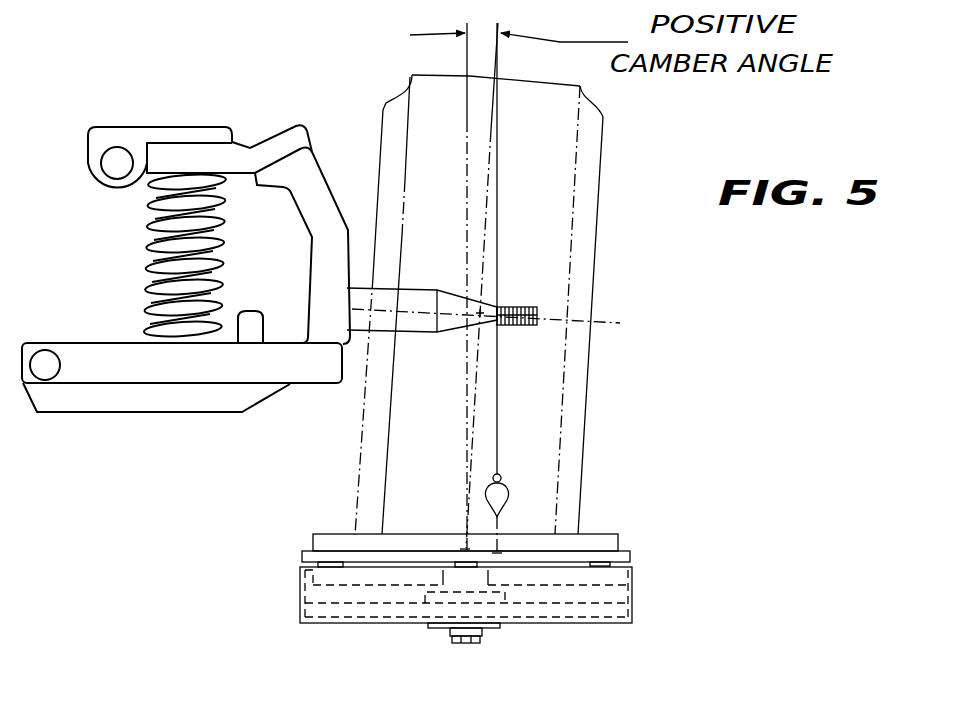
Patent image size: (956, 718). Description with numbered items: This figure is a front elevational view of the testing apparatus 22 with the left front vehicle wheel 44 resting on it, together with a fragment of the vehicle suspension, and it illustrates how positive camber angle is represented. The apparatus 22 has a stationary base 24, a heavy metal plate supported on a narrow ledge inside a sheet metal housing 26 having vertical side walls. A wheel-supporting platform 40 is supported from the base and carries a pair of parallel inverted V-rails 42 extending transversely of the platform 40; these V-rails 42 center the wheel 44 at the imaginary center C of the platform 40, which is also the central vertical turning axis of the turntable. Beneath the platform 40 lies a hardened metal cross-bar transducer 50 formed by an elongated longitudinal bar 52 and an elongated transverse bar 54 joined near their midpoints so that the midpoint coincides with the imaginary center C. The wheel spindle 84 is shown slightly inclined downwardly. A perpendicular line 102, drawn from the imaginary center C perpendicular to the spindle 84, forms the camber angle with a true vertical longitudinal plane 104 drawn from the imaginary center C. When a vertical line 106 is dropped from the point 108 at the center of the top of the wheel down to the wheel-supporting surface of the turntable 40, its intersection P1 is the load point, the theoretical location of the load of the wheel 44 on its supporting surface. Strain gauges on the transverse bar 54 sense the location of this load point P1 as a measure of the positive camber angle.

The testing apparatus 22 is at (441, 572).
The stationary base 24 is at (625, 608).
The sheet metal housing 26 is at (476, 614).
The wheel-supporting platform 40 is at (310, 553).
The inverted V-rails 42 is at (332, 540).
The vehicle wheel 44 is at (607, 165).
The cross-bar transducer 50 is at (612, 578).
The elongated longitudinal bar 52 is at (443, 573).
The elongated transverse bar 54 is at (340, 578).
The wheel spindle 84 is at (408, 300).
The perpendicular line 102 is at (485, 245).
The true vertical longitudinal plane 104 is at (467, 108).
The vertical line 106 is at (498, 405).
The point at the center of the top of the wheel 108 is at (495, 82).
The imaginary center C is at (465, 550).
The load point P1 is at (497, 552).